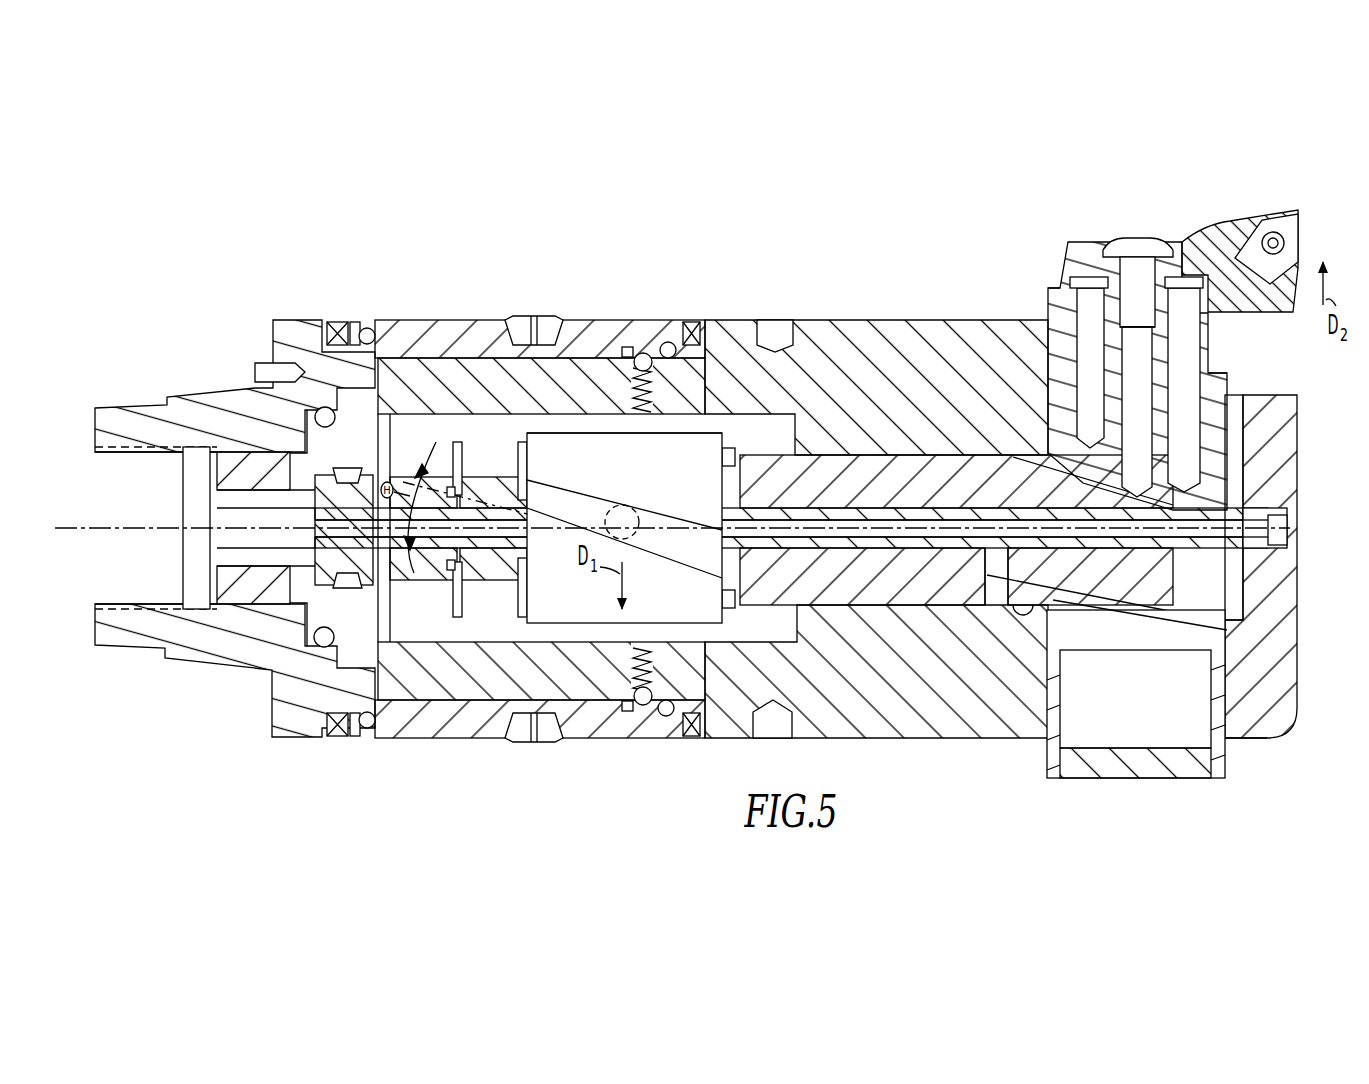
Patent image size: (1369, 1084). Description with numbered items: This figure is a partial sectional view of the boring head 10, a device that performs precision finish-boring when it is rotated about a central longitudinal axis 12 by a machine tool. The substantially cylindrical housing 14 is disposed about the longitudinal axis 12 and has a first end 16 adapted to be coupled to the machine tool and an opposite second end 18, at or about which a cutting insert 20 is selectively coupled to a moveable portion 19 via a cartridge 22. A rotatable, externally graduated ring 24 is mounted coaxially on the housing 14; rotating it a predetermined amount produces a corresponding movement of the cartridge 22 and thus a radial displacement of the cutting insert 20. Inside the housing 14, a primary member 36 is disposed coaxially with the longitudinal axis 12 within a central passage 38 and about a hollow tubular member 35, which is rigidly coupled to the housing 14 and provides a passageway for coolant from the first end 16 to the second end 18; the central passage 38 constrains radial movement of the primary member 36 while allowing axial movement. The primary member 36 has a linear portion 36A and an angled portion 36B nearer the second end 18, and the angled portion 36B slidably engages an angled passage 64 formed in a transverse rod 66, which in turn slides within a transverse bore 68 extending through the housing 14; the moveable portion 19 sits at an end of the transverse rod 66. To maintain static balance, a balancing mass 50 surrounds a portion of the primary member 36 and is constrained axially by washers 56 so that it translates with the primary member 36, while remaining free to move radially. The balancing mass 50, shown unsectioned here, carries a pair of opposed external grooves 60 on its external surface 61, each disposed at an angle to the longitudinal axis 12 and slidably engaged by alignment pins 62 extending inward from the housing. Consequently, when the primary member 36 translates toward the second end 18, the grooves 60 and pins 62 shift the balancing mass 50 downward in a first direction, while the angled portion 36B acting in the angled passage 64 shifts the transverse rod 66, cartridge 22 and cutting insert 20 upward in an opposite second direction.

The boring head 10 is at (678, 212).
The central longitudinal axis 12 is at (68, 526).
The housing 14 is at (840, 318).
The first end 16 is at (185, 325).
The second end 18 is at (1297, 742).
The moveable portion 19 is at (1055, 290).
The cutting insert 20 is at (1270, 215).
The cartridge 22 is at (1178, 240).
The ring 24 is at (423, 318).
The hollow tubular member 35 is at (935, 549).
The primary member 36 is at (820, 587).
The linear portion 36A is at (900, 465).
The angled portion 36B is at (1053, 620).
The central passage 38 is at (1010, 608).
The balancing mass 50 is at (678, 600).
The washers 56 is at (520, 450).
The external grooves 60 is at (695, 532).
The external surface 61 is at (667, 429).
The alignment pins 62 is at (607, 506).
The angled passage 64 is at (1193, 600).
The transverse rod 66 is at (1224, 380).
The transverse bore 68 is at (1050, 320).